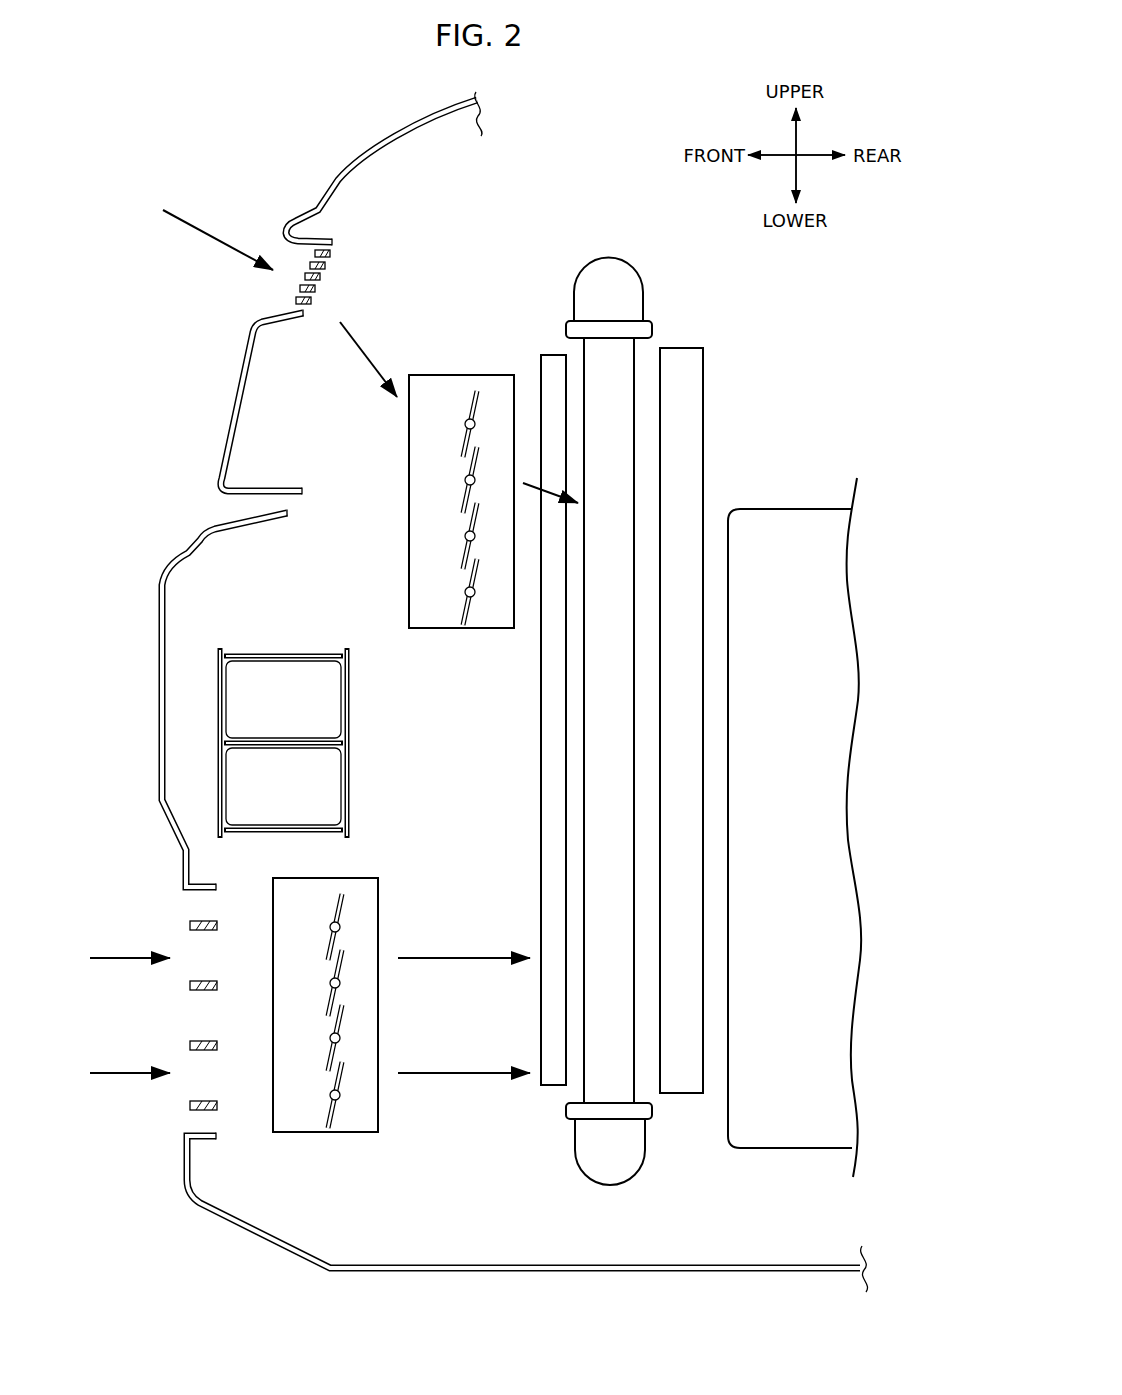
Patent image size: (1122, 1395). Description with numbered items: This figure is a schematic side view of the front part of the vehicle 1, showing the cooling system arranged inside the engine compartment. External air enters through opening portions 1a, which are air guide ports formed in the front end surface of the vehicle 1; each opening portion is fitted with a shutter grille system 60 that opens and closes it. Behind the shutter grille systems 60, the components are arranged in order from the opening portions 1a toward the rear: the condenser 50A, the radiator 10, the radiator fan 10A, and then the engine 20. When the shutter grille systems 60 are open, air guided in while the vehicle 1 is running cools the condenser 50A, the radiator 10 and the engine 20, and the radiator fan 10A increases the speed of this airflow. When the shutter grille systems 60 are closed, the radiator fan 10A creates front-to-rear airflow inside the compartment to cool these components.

The vehicle 1 is at (257, 135).
The opening portions 1a is at (347, 267).
The radiator 10 is at (645, 291).
The radiator fan 10A is at (704, 398).
The engine 20 is at (795, 509).
The condenser 50A is at (555, 355).
The shutter grille systems 60 is at (463, 375).